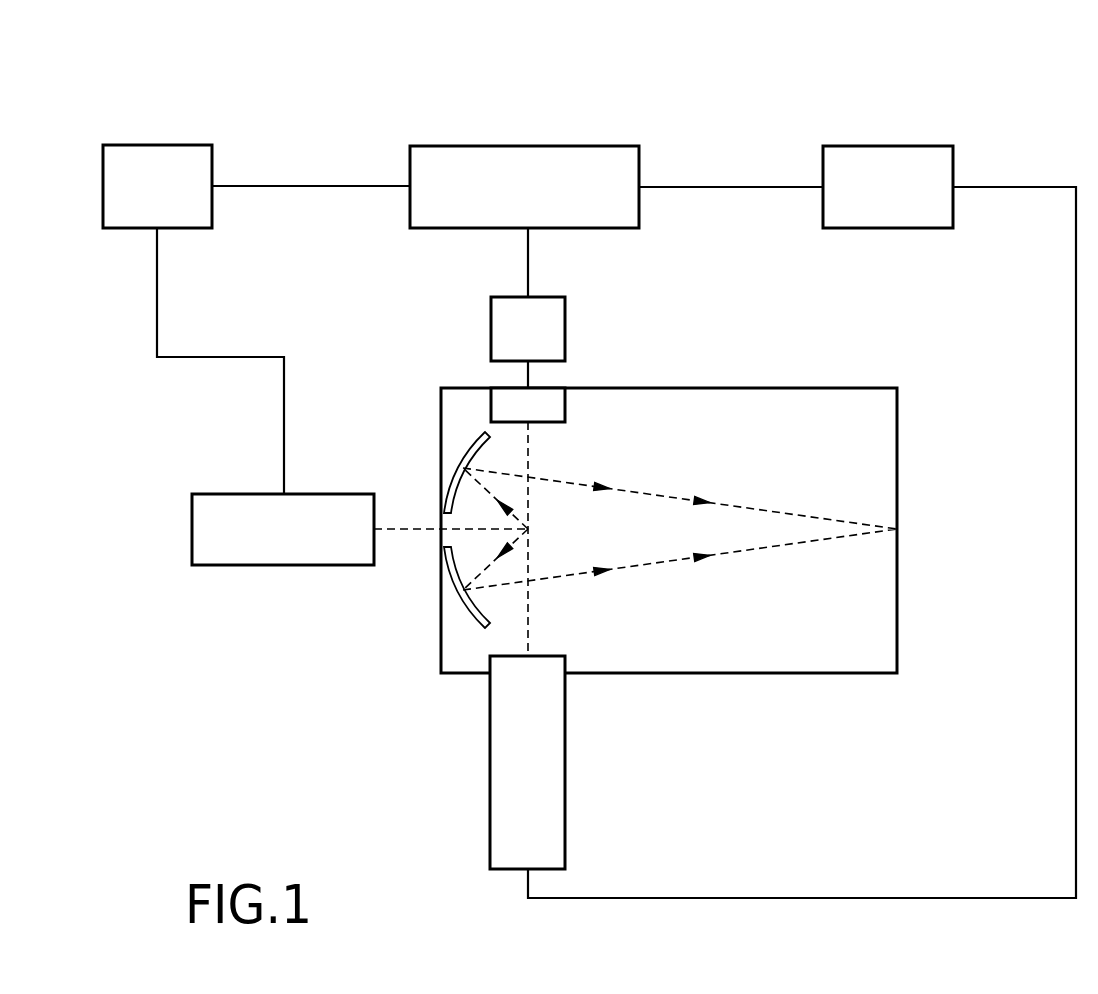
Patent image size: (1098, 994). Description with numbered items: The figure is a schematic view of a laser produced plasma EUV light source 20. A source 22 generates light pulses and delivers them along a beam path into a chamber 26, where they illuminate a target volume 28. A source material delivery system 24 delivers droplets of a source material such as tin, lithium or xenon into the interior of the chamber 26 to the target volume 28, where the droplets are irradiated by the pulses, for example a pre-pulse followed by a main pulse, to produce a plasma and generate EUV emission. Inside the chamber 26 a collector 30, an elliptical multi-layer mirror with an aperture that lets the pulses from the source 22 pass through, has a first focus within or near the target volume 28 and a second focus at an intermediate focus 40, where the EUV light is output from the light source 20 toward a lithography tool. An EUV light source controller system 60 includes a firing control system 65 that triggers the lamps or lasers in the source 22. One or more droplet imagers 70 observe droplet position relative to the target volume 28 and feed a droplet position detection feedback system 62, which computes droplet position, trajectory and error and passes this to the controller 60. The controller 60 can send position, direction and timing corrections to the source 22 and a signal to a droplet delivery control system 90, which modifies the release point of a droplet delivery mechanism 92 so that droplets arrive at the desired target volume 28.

The laser produced plasma EUV light source 20 is at (386, 730).
The source 22 is at (275, 566).
The source material delivery system 24 is at (606, 328).
The chamber 26 is at (872, 641).
The target volume 28 is at (530, 530).
The collector 30 is at (450, 455).
The intermediate focus 40 is at (830, 520).
The EUV light source controller system 60 is at (523, 146).
The droplet position detection feedback system 62 is at (884, 146).
The firing control system 65 is at (158, 145).
The droplet imager 70 is at (565, 760).
The droplet delivery control system 90 is at (491, 327).
The droplet delivery mechanism 92 is at (566, 407).